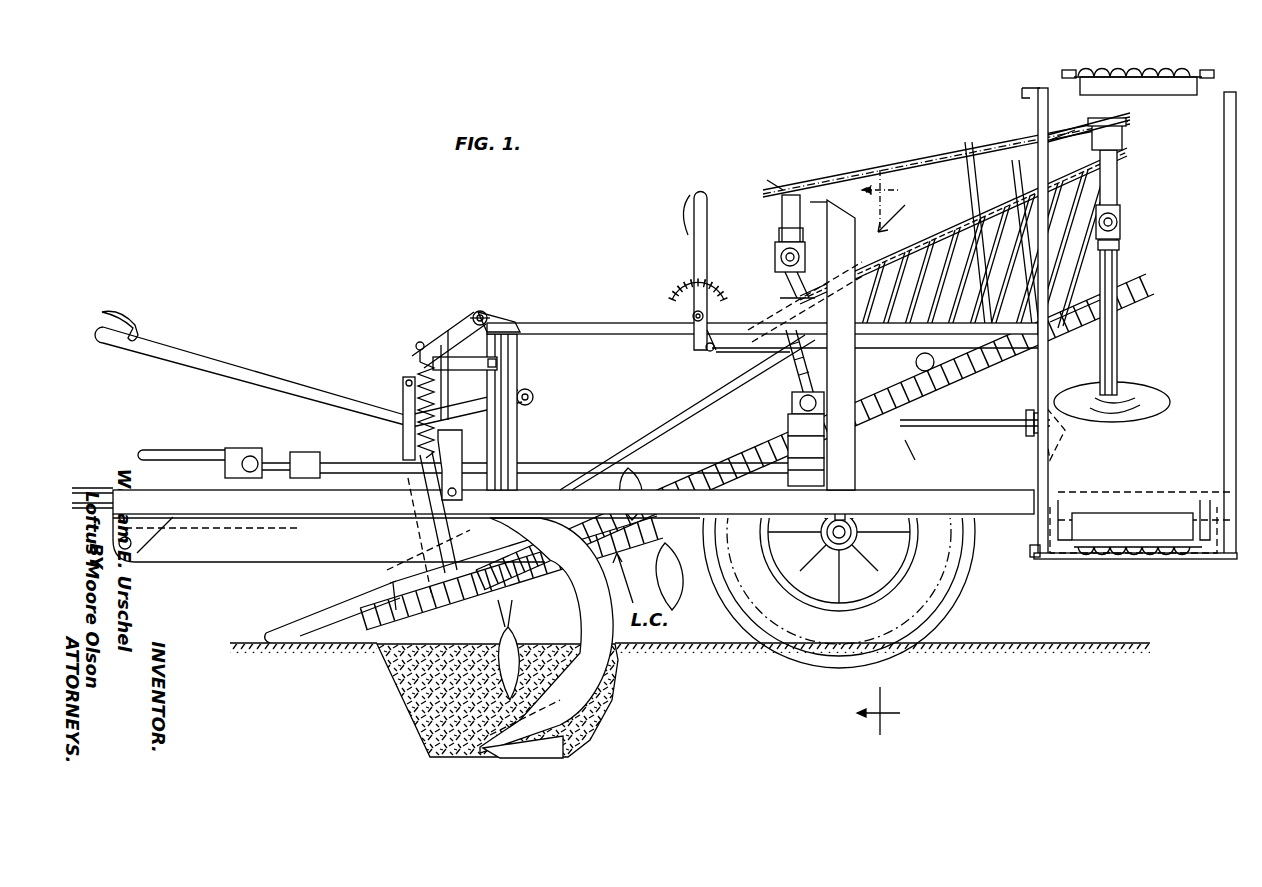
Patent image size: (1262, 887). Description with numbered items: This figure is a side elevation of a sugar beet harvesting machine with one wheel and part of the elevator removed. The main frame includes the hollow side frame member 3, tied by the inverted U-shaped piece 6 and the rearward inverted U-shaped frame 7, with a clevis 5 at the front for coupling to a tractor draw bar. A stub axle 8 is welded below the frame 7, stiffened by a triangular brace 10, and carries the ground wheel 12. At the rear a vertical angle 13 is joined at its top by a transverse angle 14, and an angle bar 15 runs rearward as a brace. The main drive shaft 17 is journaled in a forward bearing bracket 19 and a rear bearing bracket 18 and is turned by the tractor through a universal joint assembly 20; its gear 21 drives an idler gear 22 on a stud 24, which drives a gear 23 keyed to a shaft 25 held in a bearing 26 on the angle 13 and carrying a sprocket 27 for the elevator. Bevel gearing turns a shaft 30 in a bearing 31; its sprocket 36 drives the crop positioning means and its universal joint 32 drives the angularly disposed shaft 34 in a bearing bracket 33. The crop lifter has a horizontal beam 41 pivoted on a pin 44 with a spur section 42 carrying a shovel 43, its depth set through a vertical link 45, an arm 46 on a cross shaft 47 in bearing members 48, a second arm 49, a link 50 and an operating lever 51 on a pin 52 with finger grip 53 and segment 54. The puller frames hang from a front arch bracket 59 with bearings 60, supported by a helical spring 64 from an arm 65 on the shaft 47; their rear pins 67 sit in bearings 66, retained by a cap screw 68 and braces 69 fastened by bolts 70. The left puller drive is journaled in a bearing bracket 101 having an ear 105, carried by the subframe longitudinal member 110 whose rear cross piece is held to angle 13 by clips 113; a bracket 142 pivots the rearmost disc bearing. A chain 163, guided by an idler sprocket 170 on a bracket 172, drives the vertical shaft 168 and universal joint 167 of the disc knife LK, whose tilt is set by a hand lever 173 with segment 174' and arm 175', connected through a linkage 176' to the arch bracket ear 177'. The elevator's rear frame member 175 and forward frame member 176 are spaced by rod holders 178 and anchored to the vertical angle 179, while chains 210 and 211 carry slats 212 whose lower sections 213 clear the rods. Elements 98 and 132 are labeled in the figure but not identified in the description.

The side frame member 3 is at (188, 490).
The clevis 5 is at (96, 487).
The inverted U-shaped piece 6 is at (500, 362).
The inverted U-shaped frame 7 is at (835, 215).
The stub axle 8 is at (836, 538).
The triangular brace 10 is at (800, 530).
The ground wheel 12 is at (965, 612).
The vertical angle 13 is at (1038, 115).
The transverse angle 14 is at (1022, 88).
The angle bar 15 is at (610, 322).
The main drive shaft 17 is at (338, 462).
The bearing bracket 18 is at (792, 406).
The bearing bracket 19 is at (300, 452).
The universal joint assembly 20 is at (239, 443).
The gear 21 is at (715, 522).
The idler gear 22 is at (786, 432).
The gear 23 is at (786, 402).
The stud 24 is at (786, 448).
The shaft 25 is at (992, 420).
The bearing 26 is at (1040, 423).
The sprocket 27 is at (1055, 445).
The shaft 30 is at (915, 363).
The bearing 31 is at (790, 296).
The universal joint 32 is at (775, 257).
The bearing bracket 33 is at (780, 212).
The angularly disposed shaft 34 is at (779, 237).
The sprocket 36 is at (790, 285).
The horizontal beam 41 is at (272, 550).
The spur section 42 is at (565, 685).
The shovel 43 is at (480, 758).
The pin 44 is at (137, 556).
The vertical link 45 is at (403, 397).
The arm 46 is at (430, 332).
The cross shaft 47 is at (522, 322).
The bearing members 48 is at (495, 305).
The second arm 49 is at (487, 312).
The link 50 is at (440, 345).
The operating lever 51 is at (165, 340).
The pin 52 is at (535, 395).
The finger grip 53 is at (108, 312).
The segment 54 is at (416, 375).
The front arch bracket 59 is at (470, 440).
The bearings 60 is at (413, 524).
The helical spring 64 is at (415, 352).
The arm 65 is at (457, 337).
The bearings 66 is at (788, 368).
The pins 67 is at (802, 385).
The cap screw 68 is at (790, 330).
The braces 69 is at (657, 420).
The bolts 70 is at (447, 612).
The digging blade 98 is at (317, 630).
The bearing bracket 101 is at (1118, 268).
The ear 105 is at (1120, 245).
The longitudinal member 110 is at (1000, 212).
The clips 113 is at (1068, 128).
The sprocket 132 is at (918, 442).
The bracket 142 is at (975, 190).
The chain 163 is at (900, 167).
The universal joint 167 is at (1122, 222).
The vertical shaft 168 is at (1124, 160).
The idler sprocket 170 is at (1132, 114).
The bracket 172 is at (1128, 126).
The hand lever 173 is at (690, 305).
The segment 174' is at (659, 224).
The elevator frame member 175 is at (1225, 349).
The arm 175' is at (833, 352).
The forward elevator frame member 176 is at (1012, 566).
The rod 176' is at (708, 368).
The arch bracket ear 177' is at (1117, 314).
The rod holders 178 is at (1070, 560).
The vertical angle 179 is at (1228, 427).
The elevator chain 210 is at (1210, 70).
The elevator chain 211 is at (1065, 70).
The elevator slats 212 is at (1140, 77).
The lower section 213 is at (1085, 70).